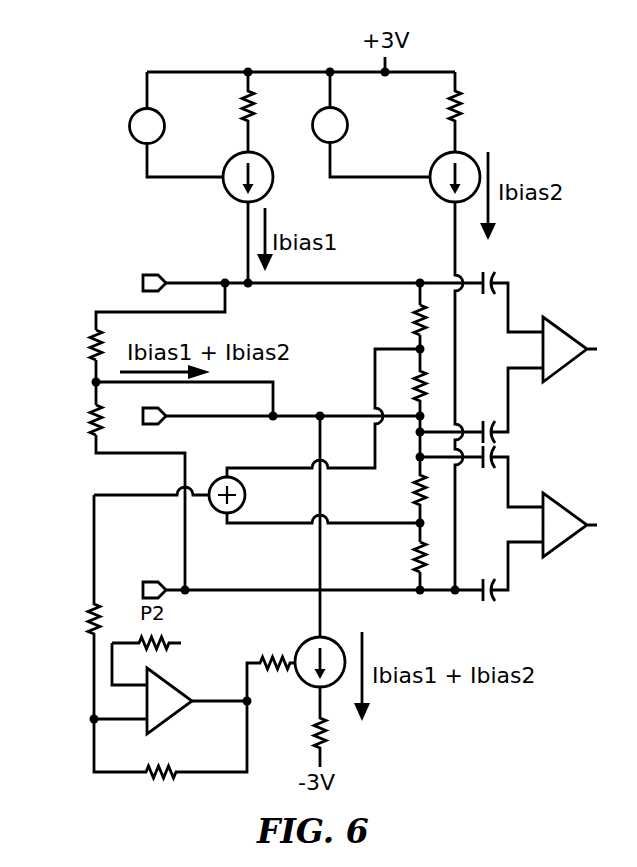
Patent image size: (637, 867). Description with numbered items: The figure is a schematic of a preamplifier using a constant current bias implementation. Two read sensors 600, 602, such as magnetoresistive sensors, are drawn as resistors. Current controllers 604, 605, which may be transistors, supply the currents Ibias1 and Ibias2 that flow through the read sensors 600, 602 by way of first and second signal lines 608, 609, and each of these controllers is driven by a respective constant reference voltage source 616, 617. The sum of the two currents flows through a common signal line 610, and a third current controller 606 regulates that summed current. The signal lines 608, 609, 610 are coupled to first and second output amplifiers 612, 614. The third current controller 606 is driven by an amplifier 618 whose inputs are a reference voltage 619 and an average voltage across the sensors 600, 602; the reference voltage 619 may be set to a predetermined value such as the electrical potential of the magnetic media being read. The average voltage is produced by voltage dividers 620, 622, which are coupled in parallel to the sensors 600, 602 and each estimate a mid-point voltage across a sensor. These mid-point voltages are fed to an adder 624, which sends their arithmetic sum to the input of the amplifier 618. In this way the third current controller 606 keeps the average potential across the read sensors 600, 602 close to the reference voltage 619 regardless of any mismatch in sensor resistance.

The read sensor 600 is at (93, 330).
The read sensor 602 is at (92, 435).
The current controller 604 is at (224, 189).
The current controller 605 is at (432, 194).
The third current controller 606 is at (302, 681).
The first signal line 608 is at (117, 312).
The second signal line 609 is at (185, 467).
The common signal line 610 is at (237, 418).
The first output amplifier 612 is at (559, 370).
The second output amplifier 614 is at (553, 550).
The constant reference voltage source 616 is at (137, 142).
The constant reference voltage source 617 is at (320, 140).
The amplifier 618 is at (165, 719).
The reference voltage 619 is at (181, 644).
The voltage divider 620 is at (446, 297).
The voltage divider 622 is at (443, 580).
The adder 624 is at (213, 505).